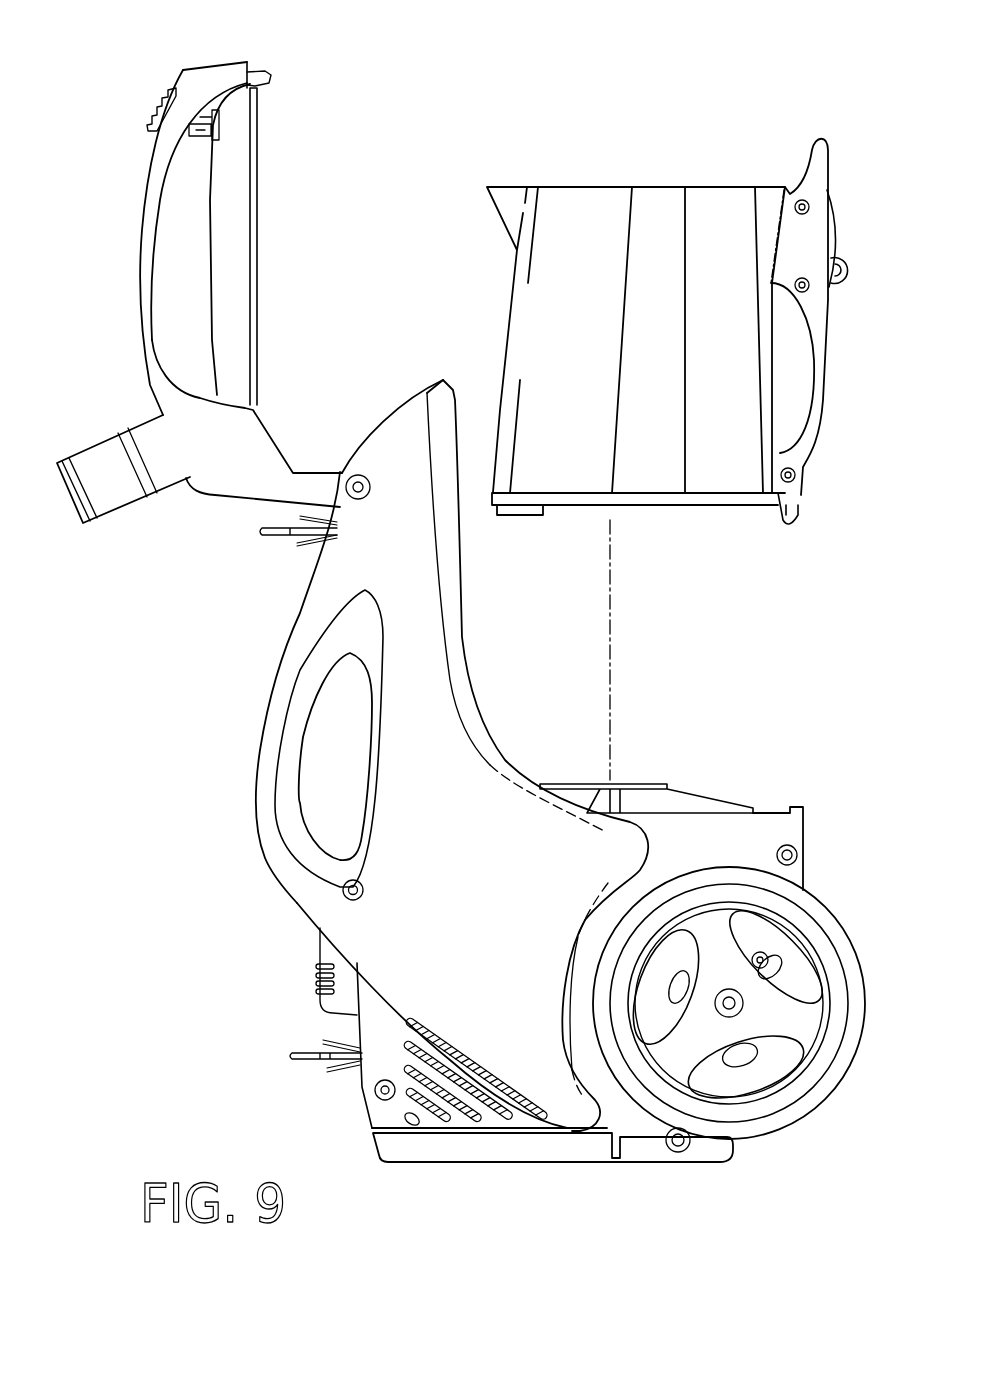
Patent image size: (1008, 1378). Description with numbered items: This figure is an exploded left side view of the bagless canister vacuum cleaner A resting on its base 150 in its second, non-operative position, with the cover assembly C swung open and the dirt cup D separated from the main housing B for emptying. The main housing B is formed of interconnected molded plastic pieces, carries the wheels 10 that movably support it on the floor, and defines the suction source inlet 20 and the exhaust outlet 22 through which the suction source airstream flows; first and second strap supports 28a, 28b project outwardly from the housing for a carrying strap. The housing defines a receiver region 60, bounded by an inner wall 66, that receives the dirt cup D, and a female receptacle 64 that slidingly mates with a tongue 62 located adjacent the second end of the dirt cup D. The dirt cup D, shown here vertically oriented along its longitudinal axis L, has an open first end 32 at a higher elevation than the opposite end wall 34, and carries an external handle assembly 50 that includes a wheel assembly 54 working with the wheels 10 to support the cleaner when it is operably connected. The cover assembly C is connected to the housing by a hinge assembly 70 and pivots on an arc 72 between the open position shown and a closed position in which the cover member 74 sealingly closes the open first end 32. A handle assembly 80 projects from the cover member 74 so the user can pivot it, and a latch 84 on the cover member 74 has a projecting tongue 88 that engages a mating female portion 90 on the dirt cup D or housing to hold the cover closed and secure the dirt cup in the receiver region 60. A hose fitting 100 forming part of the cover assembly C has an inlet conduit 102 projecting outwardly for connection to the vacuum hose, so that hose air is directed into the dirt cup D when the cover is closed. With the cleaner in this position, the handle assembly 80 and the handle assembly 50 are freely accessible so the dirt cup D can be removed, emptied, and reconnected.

The wheels 10 is at (805, 1125).
The suction source inlet 20 is at (645, 778).
The exhaust outlet 22 is at (462, 1122).
The first strap support 28a is at (300, 1067).
The second strap support 28b is at (280, 537).
The open first end 32 is at (552, 185).
The end wall 34 is at (581, 505).
The handle assembly 50 is at (832, 405).
The wheel assembly 54 is at (847, 257).
The receiver region 60 is at (544, 772).
The tongue 62 is at (787, 527).
The female receptacle 64 is at (793, 802).
The inner wall 66 is at (474, 685).
The hinge assembly 70 is at (334, 467).
The arc 72 is at (297, 123).
The cover member 74 is at (233, 242).
The handle assembly 80 is at (133, 297).
The latch 84 is at (152, 98).
The projecting tongue 88 is at (288, 66).
The female portion 90 is at (773, 188).
The hose fitting 100 is at (150, 430).
The inlet conduit 102 is at (72, 518).
The base 150 is at (630, 1168).
The vacuum cleaner A is at (240, 658).
The main housing B is at (307, 912).
The cover assembly C is at (230, 502).
The dirt cup D is at (542, 307).
The longitudinal axis L is at (611, 648).